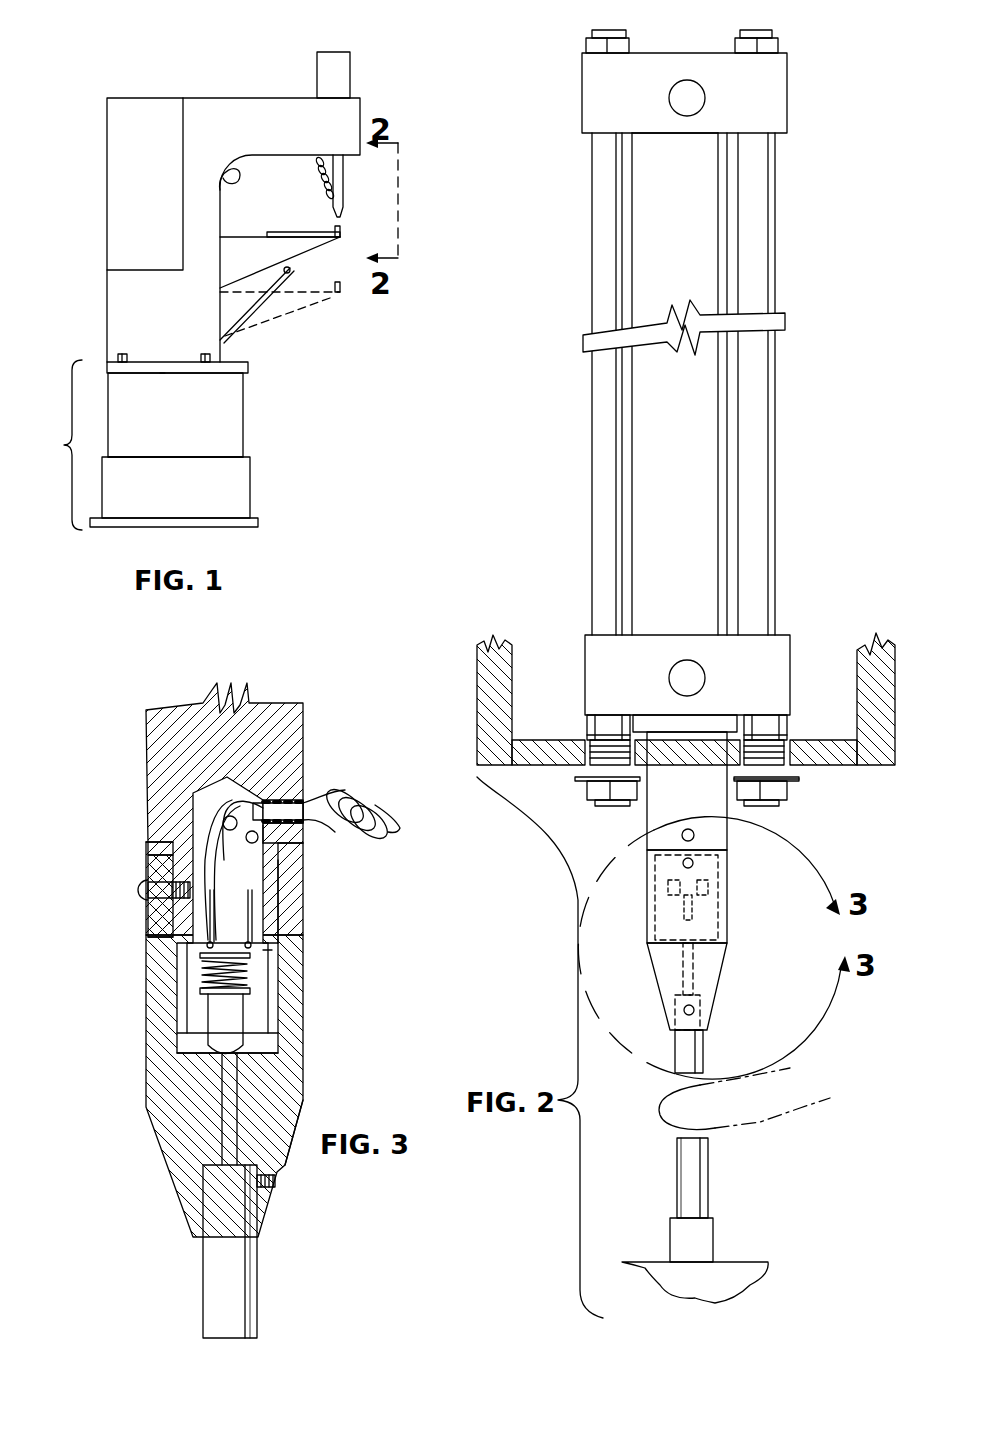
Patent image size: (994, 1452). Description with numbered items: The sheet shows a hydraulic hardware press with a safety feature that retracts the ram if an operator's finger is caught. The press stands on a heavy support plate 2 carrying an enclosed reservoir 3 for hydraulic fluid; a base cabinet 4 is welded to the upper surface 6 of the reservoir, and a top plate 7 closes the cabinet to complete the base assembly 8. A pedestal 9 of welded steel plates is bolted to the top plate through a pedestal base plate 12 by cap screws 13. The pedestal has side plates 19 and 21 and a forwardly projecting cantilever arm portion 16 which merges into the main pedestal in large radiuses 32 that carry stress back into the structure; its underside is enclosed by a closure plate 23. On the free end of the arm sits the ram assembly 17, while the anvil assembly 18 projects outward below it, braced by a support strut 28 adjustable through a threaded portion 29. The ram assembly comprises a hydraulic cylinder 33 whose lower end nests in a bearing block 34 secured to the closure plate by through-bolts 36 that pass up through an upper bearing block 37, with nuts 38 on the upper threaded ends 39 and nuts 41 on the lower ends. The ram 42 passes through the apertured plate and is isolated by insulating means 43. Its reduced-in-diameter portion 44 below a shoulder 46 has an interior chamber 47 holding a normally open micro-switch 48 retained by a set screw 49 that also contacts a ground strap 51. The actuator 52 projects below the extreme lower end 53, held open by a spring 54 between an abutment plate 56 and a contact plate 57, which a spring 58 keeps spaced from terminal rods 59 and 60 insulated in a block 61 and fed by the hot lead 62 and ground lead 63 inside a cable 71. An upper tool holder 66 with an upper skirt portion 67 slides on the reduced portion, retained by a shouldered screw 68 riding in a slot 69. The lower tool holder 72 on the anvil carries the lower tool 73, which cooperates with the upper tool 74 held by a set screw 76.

In FIG. 1, the support plate 2 is at (167, 527).
In FIG. 1, the reservoir 3 is at (240, 487).
In FIG. 1, the base cabinet 4 is at (234, 418).
In FIG. 1, the upper surface of the reservoir 6 is at (172, 455).
In FIG. 1, the top plate 7 is at (168, 373).
In FIG. 1, the base assembly 8 is at (64, 445).
In FIG. 1, the pedestal 9 is at (92, 246).
In FIG. 1, the pedestal base plate 12 is at (162, 362).
In FIG. 1, the cap screws 13 is at (122, 352).
In FIG. 1, the cantilever arm portion 16 is at (262, 98).
In FIG. 2, the cantilever arm portion 16 is at (515, 695).
In FIG. 1, the ram assembly 17 is at (352, 182).
In FIG. 2, the ram assembly 17 is at (582, 540).
In FIG. 1, the anvil assembly 18 is at (262, 228).
In FIG. 1, the side plate 19 is at (228, 147).
In FIG. 2, the side plate 19 is at (486, 645).
In FIG. 2, the side plate 21 is at (860, 650).
In FIG. 2, the closure plate 23 is at (548, 752).
In FIG. 1, the support strut 28 is at (250, 312).
In FIG. 1, the threaded portion 29 is at (292, 270).
In FIG. 1, the large radiuses 32 is at (222, 185).
In FIG. 2, the hydraulic cylinder 33 is at (682, 425).
In FIG. 2, the bearing block 34 is at (760, 689).
In FIG. 2, the through-bolts 36 is at (605, 388).
In FIG. 2, the upper bearing block 37 is at (772, 100).
In FIG. 2, the nuts 38 is at (776, 46).
In FIG. 2, the upper threaded ends 39 is at (605, 32).
In FIG. 2, the nuts 41 is at (780, 790).
In FIG. 2, the ram 42 is at (712, 830).
In FIG. 2, the insulating means 43 is at (595, 735).
In FIG. 3, the reduced-in-diameter portion 44 is at (290, 885).
In FIG. 3, the shoulder 46 is at (163, 845).
In FIG. 3, the interior chamber 47 is at (148, 862).
In FIG. 3, the micro-switch 48 is at (255, 990).
In FIG. 3, the set screw 49 is at (280, 953).
In FIG. 3, the strap 51 is at (290, 902).
In FIG. 3, the actuator 52 is at (230, 1045).
In FIG. 3, the extreme lower end 53 is at (275, 1015).
In FIG. 3, the spring 54 is at (215, 975).
In FIG. 3, the abutment plate 56 is at (202, 997).
In FIG. 3, the contact plate 57 is at (200, 958).
In FIG. 3, the spring 58 is at (228, 916).
In FIG. 3, the terminal rod 59 is at (222, 870).
In FIG. 3, the terminal rod 60 is at (268, 868).
In FIG. 3, the block 61 is at (265, 920).
In FIG. 3, the hot lead 62 is at (234, 825).
In FIG. 3, the ground lead 63 is at (280, 850).
In FIG. 2, the upper tool holder 66 is at (738, 928).
In FIG. 3, the upper tool holder 66 is at (316, 1098).
In FIG. 3, the upper skirt portion 67 is at (160, 1005).
In FIG. 3, the shouldered screw 68 is at (136, 890).
In FIG. 3, the slot 69 is at (155, 908).
In FIG. 3, the cable 71 is at (385, 812).
In FIG. 2, the lower tool holder 72 is at (737, 1275).
In FIG. 2, the lower tool 73 is at (697, 1178).
In FIG. 2, the upper tool 74 is at (702, 1050).
In FIG. 3, the upper tool 74 is at (238, 1292).
In FIG. 3, the set screw 76 is at (275, 1181).